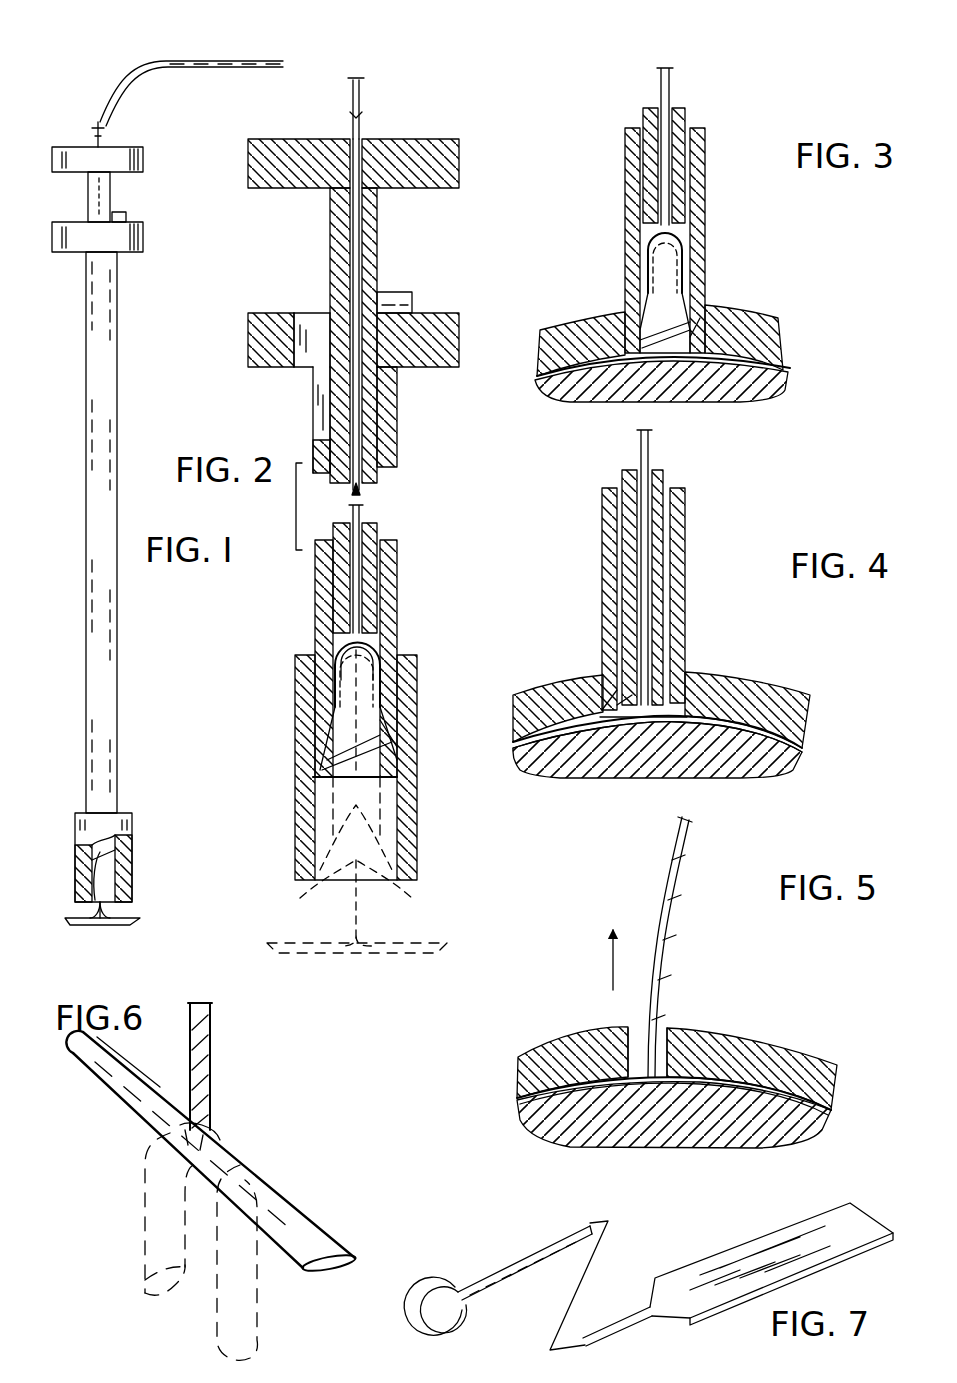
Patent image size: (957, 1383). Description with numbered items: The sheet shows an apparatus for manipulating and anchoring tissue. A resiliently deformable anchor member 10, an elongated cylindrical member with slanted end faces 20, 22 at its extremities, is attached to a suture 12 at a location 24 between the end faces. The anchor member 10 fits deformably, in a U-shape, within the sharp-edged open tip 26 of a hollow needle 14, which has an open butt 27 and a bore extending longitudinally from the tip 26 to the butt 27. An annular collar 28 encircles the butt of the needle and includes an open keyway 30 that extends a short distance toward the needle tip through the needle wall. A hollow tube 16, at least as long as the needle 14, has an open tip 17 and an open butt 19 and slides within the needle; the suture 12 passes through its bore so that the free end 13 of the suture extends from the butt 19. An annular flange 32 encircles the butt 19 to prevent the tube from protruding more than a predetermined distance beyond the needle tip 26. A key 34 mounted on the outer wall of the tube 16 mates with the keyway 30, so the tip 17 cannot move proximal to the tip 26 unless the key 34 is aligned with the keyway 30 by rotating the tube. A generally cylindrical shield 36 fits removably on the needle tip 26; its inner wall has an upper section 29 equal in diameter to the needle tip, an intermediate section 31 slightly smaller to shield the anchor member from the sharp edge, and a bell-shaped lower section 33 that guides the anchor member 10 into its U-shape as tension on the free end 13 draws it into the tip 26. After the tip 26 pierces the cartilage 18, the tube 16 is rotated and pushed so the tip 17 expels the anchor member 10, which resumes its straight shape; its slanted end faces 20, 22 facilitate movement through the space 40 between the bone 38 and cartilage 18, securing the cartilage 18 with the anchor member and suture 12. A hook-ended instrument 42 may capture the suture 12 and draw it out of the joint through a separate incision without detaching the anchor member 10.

In FIG. 1, the anchor member 10 is at (120, 927).
In FIG. 2, the anchor member 10 is at (385, 655).
In FIG. 3, the anchor member 10 is at (685, 253).
In FIG. 4, the anchor member 10 is at (720, 715).
In FIG. 5, the anchor member 10 is at (725, 1085).
In FIG. 6, the anchor member 10 is at (285, 1187).
In FIG. 1, the suture 12 is at (97, 142).
In FIG. 2, the suture 12 is at (365, 512).
In FIG. 3, the suture 12 is at (670, 92).
In FIG. 4, the suture 12 is at (648, 452).
In FIG. 5, the suture 12 is at (655, 980).
In FIG. 6, the suture 12 is at (210, 1068).
In FIG. 1, the free end of the suture 13 is at (243, 62).
In FIG. 2, the free end of the suture 13 is at (360, 92).
In FIG. 1, the hollow needle 14 is at (117, 723).
In FIG. 2, the hollow needle 14 is at (397, 548).
In FIG. 3, the hollow needle 14 is at (705, 155).
In FIG. 4, the hollow needle 14 is at (685, 540).
In FIG. 2, the hollow tube 16 is at (380, 535).
In FIG. 3, the hollow tube 16 is at (690, 118).
In FIG. 4, the hollow tube 16 is at (665, 480).
In FIG. 2, the open tip of the tube 17 is at (320, 632).
In FIG. 3, the open tip of the tube 17 is at (640, 230).
In FIG. 3, the cartilage 18 is at (765, 320).
In FIG. 4, the cartilage 18 is at (785, 690).
In FIG. 5, the cartilage 18 is at (810, 1053).
In FIG. 1, the open butt of the tube 19 is at (88, 175).
In FIG. 2, the open butt of the tube 19 is at (330, 190).
In FIG. 6, the end face 20 is at (330, 1268).
In FIG. 6, the end face 22 is at (88, 1082).
In FIG. 6, the attachment location 24 is at (212, 1142).
In FIG. 1, the needle tip 26 is at (85, 850).
In FIG. 2, the needle tip 26 is at (395, 772).
In FIG. 3, the needle tip 26 is at (700, 340).
In FIG. 4, the needle tip 26 is at (690, 700).
In FIG. 1, the open butt of the needle 27 is at (113, 262).
In FIG. 2, the open butt of the needle 27 is at (397, 385).
In FIG. 1, the annular collar 28 is at (133, 253).
In FIG. 2, the annular collar 28 is at (460, 355).
In FIG. 2, the upper section of the shield 29 is at (395, 695).
In FIG. 2, the keyway 30 is at (318, 318).
In FIG. 2, the intermediate section of the shield 31 is at (395, 815).
In FIG. 1, the annular flange 32 is at (137, 147).
In FIG. 2, the annular flange 32 is at (440, 139).
In FIG. 2, the lower section of the shield 33 is at (405, 877).
In FIG. 1, the key 34 is at (120, 212).
In FIG. 2, the key 34 is at (400, 292).
In FIG. 1, the shield 36 is at (132, 850).
In FIG. 2, the shield 36 is at (295, 725).
In FIG. 3, the bone 38 is at (745, 400).
In FIG. 4, the bone 38 is at (770, 780).
In FIG. 5, the bone 38 is at (780, 1150).
In FIG. 3, the space 40 is at (785, 365).
In FIG. 4, the space 40 is at (800, 748).
In FIG. 5, the space 40 is at (830, 1117).
In FIG. 7, the hook-ended instrument 42 is at (570, 1232).